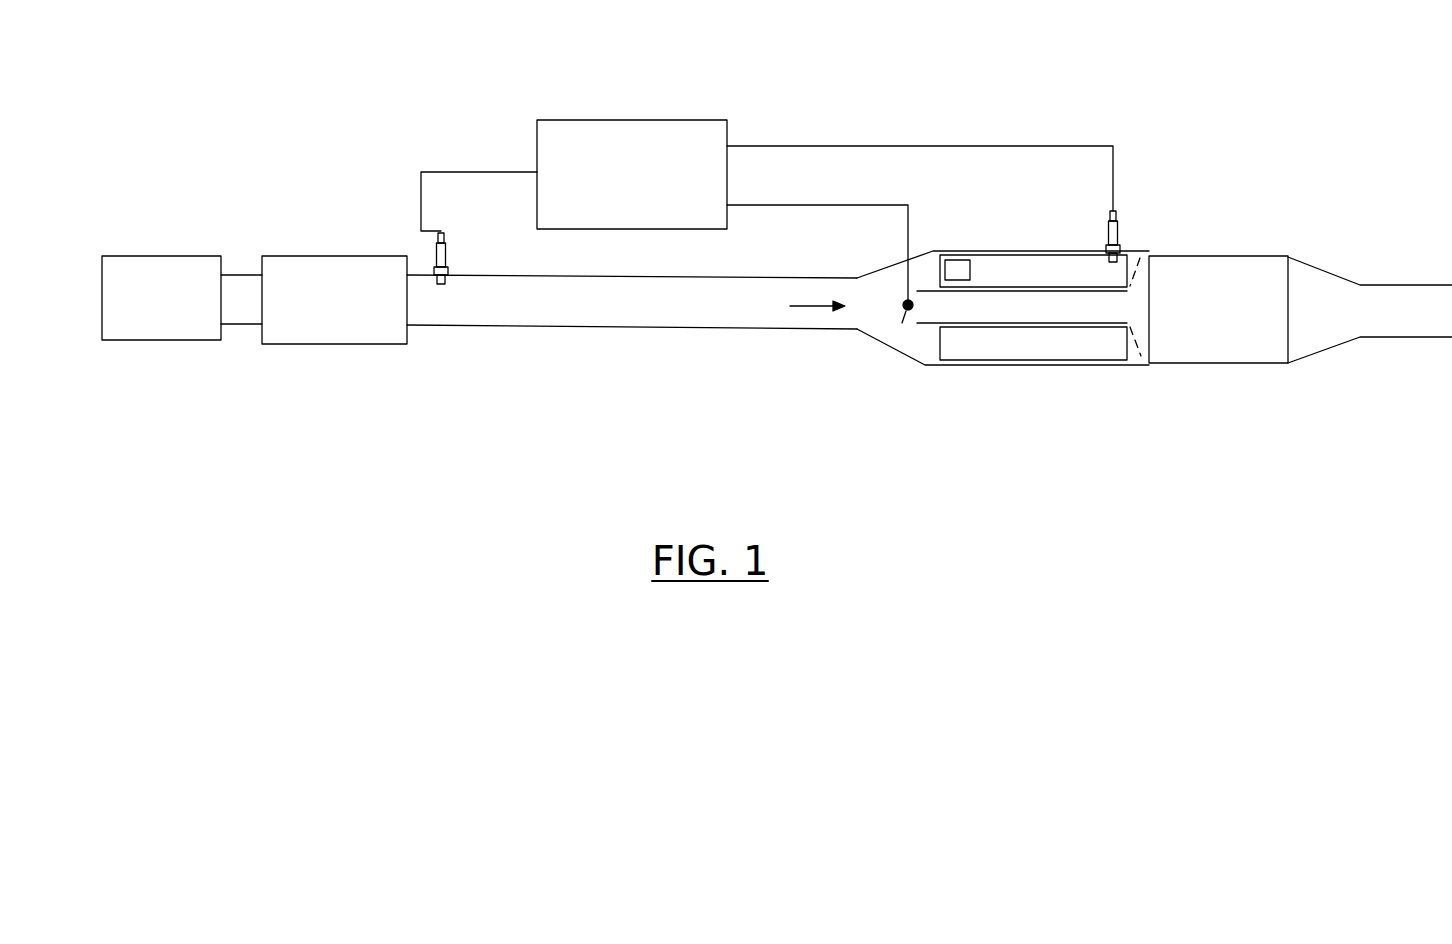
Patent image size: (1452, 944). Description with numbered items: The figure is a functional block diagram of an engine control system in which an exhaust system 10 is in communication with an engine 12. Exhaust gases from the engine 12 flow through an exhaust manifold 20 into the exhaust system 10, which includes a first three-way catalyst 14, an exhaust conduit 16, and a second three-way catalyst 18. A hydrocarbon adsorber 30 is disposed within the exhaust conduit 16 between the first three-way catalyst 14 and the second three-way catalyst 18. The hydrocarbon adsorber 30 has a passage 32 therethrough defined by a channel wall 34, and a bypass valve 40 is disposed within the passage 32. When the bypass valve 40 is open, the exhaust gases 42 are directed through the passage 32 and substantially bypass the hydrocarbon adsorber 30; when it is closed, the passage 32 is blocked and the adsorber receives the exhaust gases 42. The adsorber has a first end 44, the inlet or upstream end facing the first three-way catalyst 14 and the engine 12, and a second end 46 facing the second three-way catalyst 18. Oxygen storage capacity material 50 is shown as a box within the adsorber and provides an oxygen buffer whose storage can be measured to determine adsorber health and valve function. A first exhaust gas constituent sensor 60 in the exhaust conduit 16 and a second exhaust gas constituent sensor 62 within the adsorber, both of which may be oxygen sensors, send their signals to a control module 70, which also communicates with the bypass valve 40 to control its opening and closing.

The exhaust system 10 is at (462, 391).
The engine 12 is at (163, 256).
The first three-way catalyst 14 is at (332, 256).
The exhaust conduit 16 is at (620, 330).
The second three-way catalyst 18 is at (1297, 272).
The exhaust manifold 20 is at (238, 275).
The hydrocarbon adsorber 30 is at (1138, 345).
The passage 32 is at (972, 307).
The channel wall 34 is at (917, 322).
The bypass valve 40 is at (905, 302).
The exhaust gases 42 is at (818, 309).
The first end 44 is at (936, 267).
The second end 46 is at (1125, 258).
The oxygen storage capacity material 50 is at (962, 255).
The first exhaust gas constituent sensor 60 is at (444, 231).
The exhaust gas constituent sensor 62 is at (1116, 212).
The control module 70 is at (631, 120).